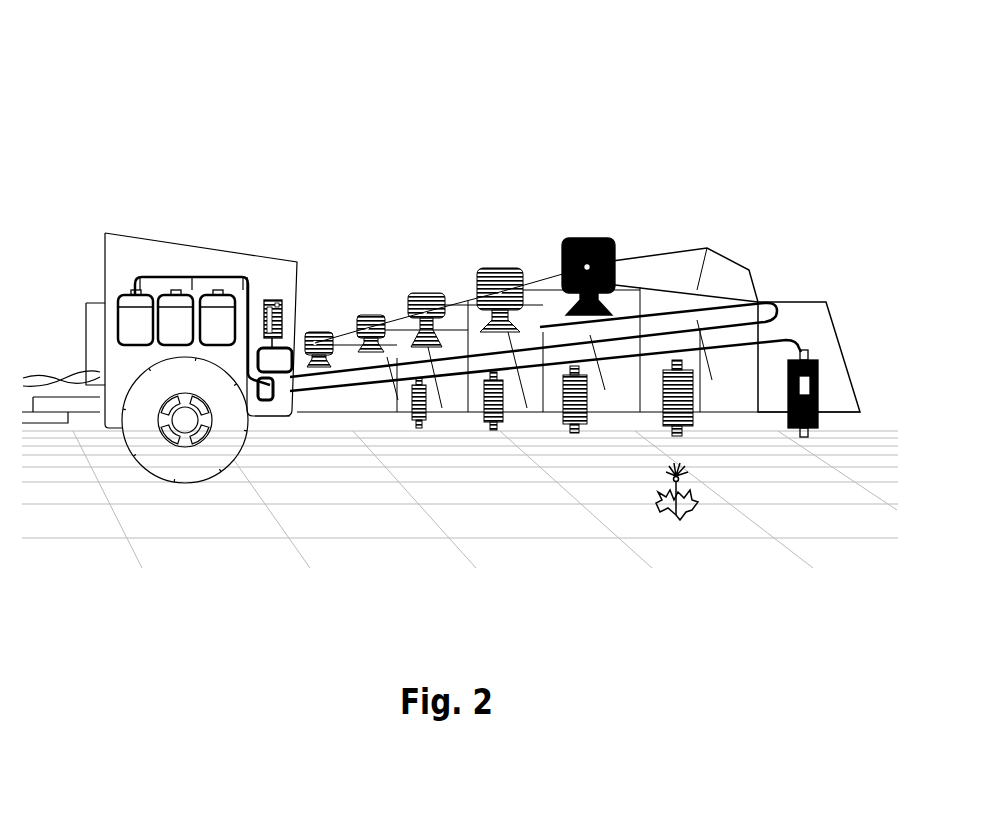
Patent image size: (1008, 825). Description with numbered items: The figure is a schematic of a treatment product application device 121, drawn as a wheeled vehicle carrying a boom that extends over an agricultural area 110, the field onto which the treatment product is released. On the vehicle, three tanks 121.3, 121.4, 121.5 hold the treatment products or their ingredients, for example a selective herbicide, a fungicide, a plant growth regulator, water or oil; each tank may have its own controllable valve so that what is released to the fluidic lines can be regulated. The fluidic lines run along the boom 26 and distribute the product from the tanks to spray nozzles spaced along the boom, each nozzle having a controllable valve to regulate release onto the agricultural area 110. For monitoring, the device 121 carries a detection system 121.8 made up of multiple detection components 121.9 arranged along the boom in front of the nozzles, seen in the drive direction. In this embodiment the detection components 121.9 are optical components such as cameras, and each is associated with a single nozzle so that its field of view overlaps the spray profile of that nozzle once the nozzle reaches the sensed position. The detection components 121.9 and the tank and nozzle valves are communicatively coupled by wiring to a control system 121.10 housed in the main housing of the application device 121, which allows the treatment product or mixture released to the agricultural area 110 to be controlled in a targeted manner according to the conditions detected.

The treatment product application device 121 is at (96, 100).
The tank 121.3 is at (122, 323).
The tank 121.4 is at (178, 292).
The tank 121.5 is at (231, 325).
The detection system 121.8 is at (590, 222).
The detection component 121.9 is at (617, 246).
The control system 121.10 is at (272, 300).
The boom 26 is at (347, 390).
The agricultural area 110 is at (460, 499).